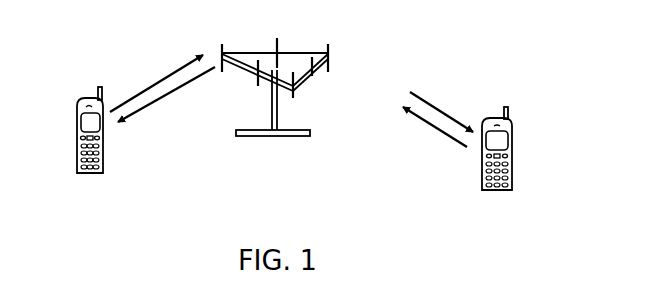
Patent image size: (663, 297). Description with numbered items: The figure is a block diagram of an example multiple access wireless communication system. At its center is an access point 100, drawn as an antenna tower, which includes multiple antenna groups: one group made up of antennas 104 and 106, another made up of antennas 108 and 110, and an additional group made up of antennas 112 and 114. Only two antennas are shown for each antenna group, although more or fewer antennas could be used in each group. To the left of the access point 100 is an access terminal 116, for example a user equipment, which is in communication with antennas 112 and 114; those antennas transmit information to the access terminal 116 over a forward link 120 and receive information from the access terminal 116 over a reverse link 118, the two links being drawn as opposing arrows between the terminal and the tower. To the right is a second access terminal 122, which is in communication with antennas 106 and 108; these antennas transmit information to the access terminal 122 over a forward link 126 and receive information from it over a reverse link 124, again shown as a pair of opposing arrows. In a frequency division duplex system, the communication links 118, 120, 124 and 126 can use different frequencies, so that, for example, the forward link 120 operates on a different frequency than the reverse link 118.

The access point 100 is at (288, 137).
The antenna 104 is at (295, 96).
The antenna 106 is at (314, 75).
The antenna 108 is at (330, 63).
The antenna 110 is at (279, 44).
The antenna 112 is at (222, 50).
The antenna 114 is at (257, 84).
The access terminal 116 is at (72, 118).
The reverse link 118 is at (162, 77).
The forward link 120 is at (155, 103).
The access terminal 122 is at (513, 137).
The reverse link 124 is at (444, 131).
The forward link 126 is at (440, 110).